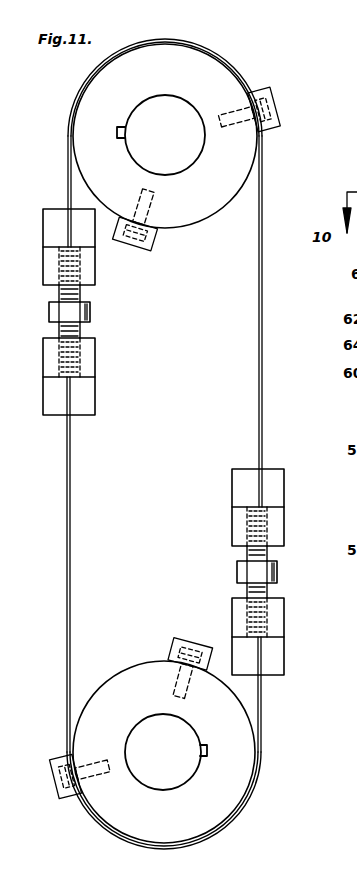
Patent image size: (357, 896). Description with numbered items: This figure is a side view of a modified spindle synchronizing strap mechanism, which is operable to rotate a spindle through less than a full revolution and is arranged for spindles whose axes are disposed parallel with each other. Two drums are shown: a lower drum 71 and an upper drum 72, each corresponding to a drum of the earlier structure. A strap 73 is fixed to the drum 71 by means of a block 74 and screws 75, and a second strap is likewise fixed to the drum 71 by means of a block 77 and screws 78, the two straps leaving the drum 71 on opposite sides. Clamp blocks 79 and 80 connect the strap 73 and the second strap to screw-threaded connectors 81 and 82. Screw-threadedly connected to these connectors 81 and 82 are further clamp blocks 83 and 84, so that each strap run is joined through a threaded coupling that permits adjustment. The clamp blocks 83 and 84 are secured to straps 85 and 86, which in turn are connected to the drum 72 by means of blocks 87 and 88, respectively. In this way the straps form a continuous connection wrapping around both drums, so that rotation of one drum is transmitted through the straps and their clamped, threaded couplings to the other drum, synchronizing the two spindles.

The drum 71 is at (232, 784).
The drum 72 is at (237, 153).
The strap 73 is at (261, 710).
The block 74 is at (175, 640).
The screws 75 is at (167, 660).
The block 77 is at (58, 797).
The screws 78 is at (83, 763).
The clamp block 79 is at (284, 655).
The clamp block 80 is at (95, 365).
The screw-threaded connector 81 is at (237, 566).
The screw-threaded connector 82 is at (90, 308).
The clamp block 83 is at (284, 474).
The clamp block 84 is at (60, 208).
The strap 85 is at (258, 378).
The strap 86 is at (68, 159).
The block 87 is at (270, 87).
The block 88 is at (154, 243).